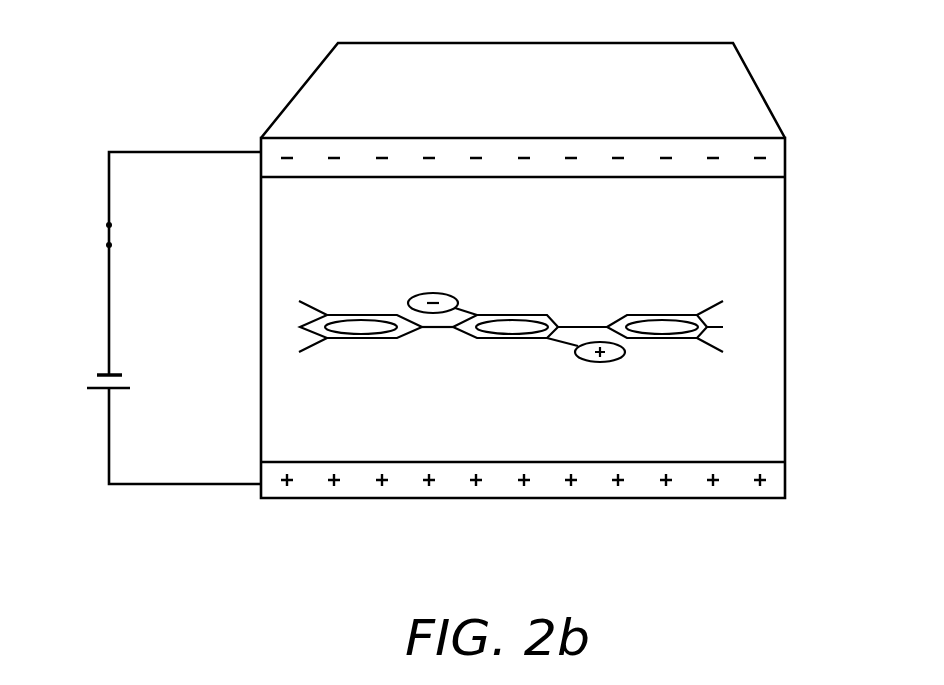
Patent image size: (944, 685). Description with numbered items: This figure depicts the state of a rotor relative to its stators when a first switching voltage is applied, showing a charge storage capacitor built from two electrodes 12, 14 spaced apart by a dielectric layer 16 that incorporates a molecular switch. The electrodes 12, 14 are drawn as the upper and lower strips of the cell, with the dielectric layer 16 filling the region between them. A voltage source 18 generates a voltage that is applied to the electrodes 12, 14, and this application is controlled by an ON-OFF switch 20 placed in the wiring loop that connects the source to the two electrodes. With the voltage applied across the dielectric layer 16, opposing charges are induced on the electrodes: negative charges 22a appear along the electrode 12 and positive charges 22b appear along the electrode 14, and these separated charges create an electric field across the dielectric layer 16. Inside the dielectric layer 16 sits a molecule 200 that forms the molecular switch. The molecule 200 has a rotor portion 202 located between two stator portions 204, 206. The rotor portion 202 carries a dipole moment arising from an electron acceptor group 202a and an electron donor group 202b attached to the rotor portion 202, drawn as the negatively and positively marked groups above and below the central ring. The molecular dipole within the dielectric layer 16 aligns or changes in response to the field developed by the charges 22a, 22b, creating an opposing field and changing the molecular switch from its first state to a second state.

The electrode 12 is at (785, 162).
The electrode 14 is at (785, 478).
The dielectric layer 16 is at (770, 254).
The voltage source 18 is at (103, 390).
The ON-OFF switch 20 is at (109, 300).
The negative charge 22a is at (758, 158).
The positive charge 22b is at (708, 488).
The molecule 200 is at (527, 311).
The rotor portion 202 is at (515, 313).
The electron acceptor group 202a is at (427, 293).
The electron donor group 202b is at (603, 362).
The stator portion 204 is at (332, 313).
The stator portion 206 is at (650, 313).